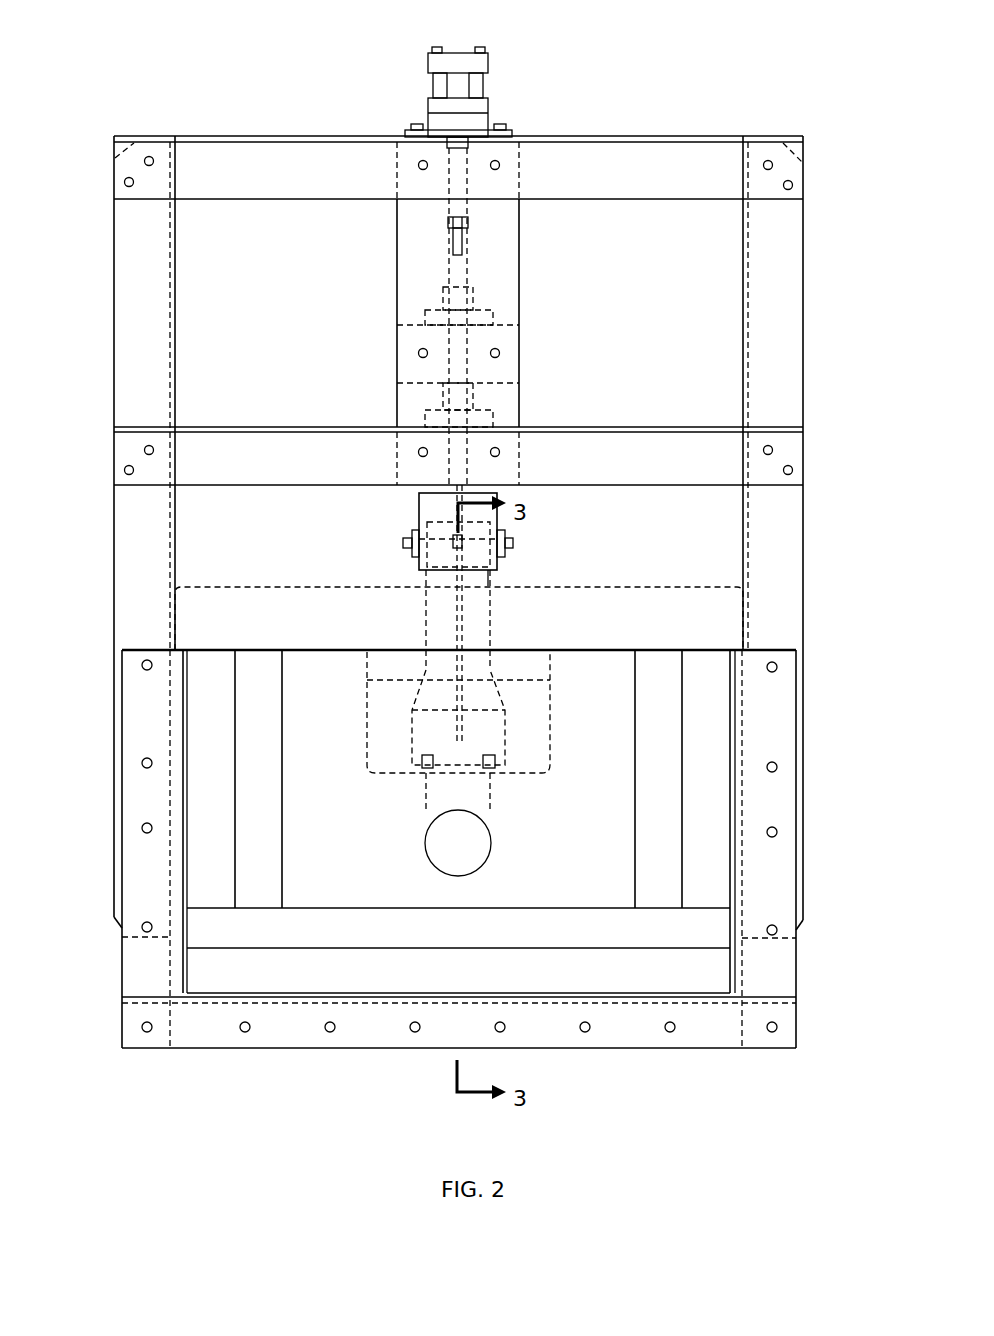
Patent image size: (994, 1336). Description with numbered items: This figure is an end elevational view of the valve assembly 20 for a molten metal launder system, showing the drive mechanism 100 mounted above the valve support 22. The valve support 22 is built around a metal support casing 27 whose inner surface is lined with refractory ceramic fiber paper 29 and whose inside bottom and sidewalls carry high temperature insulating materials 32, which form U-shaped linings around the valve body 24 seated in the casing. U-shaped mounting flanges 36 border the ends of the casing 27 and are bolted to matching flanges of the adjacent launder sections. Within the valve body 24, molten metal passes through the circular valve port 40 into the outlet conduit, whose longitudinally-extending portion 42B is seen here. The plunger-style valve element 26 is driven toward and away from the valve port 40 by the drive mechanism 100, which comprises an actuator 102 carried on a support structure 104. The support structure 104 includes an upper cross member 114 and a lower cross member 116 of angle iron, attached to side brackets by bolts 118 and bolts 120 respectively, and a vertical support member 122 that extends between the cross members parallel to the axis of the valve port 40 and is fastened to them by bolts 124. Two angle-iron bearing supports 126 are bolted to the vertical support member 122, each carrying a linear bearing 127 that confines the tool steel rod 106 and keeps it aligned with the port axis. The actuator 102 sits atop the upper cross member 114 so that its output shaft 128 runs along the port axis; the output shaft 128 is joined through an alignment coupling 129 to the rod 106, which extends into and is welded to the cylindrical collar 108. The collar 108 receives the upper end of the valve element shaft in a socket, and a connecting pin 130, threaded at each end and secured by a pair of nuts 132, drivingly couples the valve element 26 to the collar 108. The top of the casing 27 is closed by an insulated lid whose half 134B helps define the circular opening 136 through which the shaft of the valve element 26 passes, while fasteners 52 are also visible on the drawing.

The valve assembly 20 is at (634, 100).
The valve support 22 is at (290, 1075).
The valve body 24 is at (334, 876).
The valve element 26 is at (490, 699).
The support casing 27 is at (786, 805).
The refractory ceramic fiber paper 29 is at (183, 976).
The high temperature insulating materials 32 is at (199, 737).
The U-shaped mounting flanges 36 is at (130, 878).
The valve port 40 is at (478, 782).
The longitudinally-extending portion of outlet conduit 42B is at (435, 855).
The fasteners 52 is at (422, 760).
The drive mechanism 100 is at (244, 112).
The actuator 102 is at (490, 58).
The support structure 104 is at (84, 322).
The rod 106 is at (447, 265).
The collar 108 is at (433, 518).
The upper cross member 114 is at (248, 183).
The lower cross member 116 is at (258, 440).
The bolts 118 is at (149, 156).
The bolts 120 is at (144, 450).
The vertical support member 122 is at (519, 285).
The bolts 124 is at (418, 166).
The bearing supports 126 is at (401, 331).
The linear bearing 127 is at (473, 296).
The output shaft 128 is at (466, 203).
The alignment coupling 129 is at (447, 223).
The connecting pin 130 is at (513, 543).
The nuts 132 is at (408, 550).
The lid assembly half 134B is at (263, 606).
The circular opening 136 is at (494, 586).